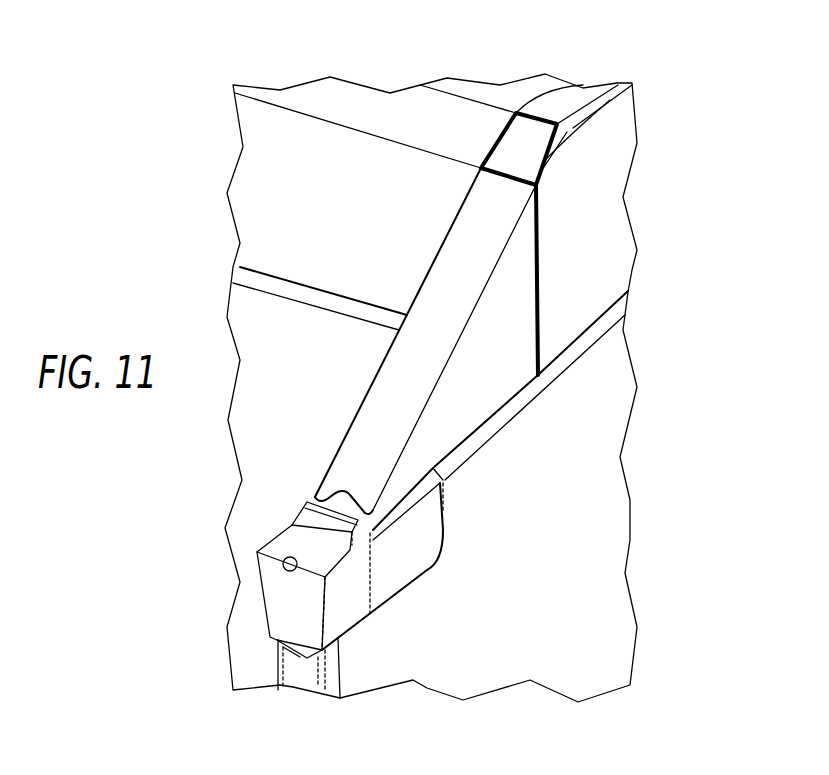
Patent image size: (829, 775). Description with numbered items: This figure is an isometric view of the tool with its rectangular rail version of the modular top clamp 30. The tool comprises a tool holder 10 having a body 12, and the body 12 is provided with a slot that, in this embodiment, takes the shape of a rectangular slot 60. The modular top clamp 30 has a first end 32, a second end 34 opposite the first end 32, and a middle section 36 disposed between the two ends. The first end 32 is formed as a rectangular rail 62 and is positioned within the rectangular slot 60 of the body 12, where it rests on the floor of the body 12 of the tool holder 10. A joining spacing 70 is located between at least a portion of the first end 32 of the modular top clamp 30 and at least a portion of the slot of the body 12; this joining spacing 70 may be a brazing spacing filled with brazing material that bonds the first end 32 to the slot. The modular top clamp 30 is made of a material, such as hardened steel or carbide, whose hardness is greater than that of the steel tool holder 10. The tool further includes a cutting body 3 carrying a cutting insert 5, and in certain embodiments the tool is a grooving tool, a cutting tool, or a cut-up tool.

The cutting body 3 is at (404, 600).
The cutting insert 5 is at (265, 602).
The tool holder 10 is at (650, 226).
The body 12 is at (604, 187).
The modular top clamp 30 is at (454, 276).
The first end 32 is at (491, 137).
The second end 34 is at (316, 461).
The middle section 36 is at (376, 356).
The rectangular slot 60 is at (550, 164).
The rectangular rail 62 is at (528, 136).
The joining spacing 70 is at (560, 148).